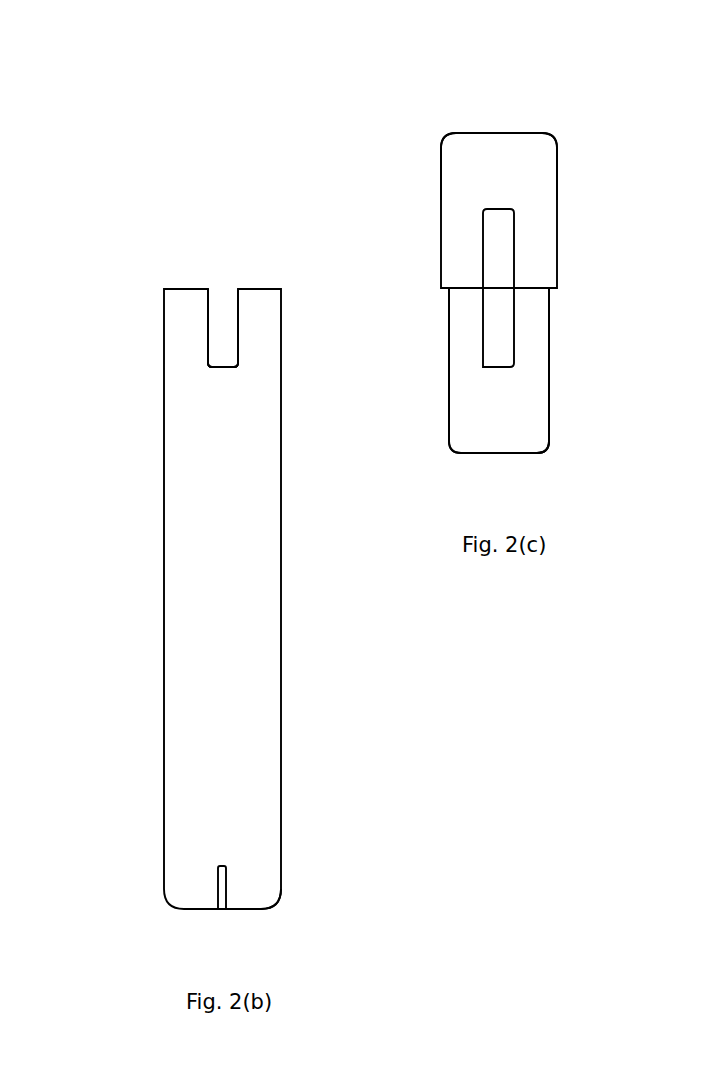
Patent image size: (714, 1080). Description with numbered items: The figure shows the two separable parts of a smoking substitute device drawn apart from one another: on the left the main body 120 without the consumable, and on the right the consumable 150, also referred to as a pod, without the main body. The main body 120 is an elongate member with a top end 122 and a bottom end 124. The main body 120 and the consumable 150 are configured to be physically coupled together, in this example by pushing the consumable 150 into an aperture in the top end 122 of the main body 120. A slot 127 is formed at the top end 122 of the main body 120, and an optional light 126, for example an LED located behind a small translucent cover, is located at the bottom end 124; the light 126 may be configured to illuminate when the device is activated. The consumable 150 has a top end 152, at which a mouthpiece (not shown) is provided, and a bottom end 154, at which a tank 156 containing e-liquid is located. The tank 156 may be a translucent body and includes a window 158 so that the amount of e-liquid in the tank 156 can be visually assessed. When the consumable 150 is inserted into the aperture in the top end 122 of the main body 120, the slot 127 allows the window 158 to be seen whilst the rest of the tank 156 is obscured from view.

In FIG. 2B, the main body 120 is at (164, 617).
In FIG. 2B, the top end 122 is at (225, 284).
In FIG. 2B, the bottom end 124 is at (241, 915).
In FIG. 2B, the light 126 is at (216, 888).
In FIG. 2B, the slot 127 is at (218, 326).
In FIG. 2C, the consumable 150 is at (442, 158).
In FIG. 2C, the top end 152 is at (513, 122).
In FIG. 2C, the bottom end 154 is at (511, 461).
In FIG. 2C, the tank 156 is at (490, 417).
In FIG. 2C, the window 158 is at (505, 267).